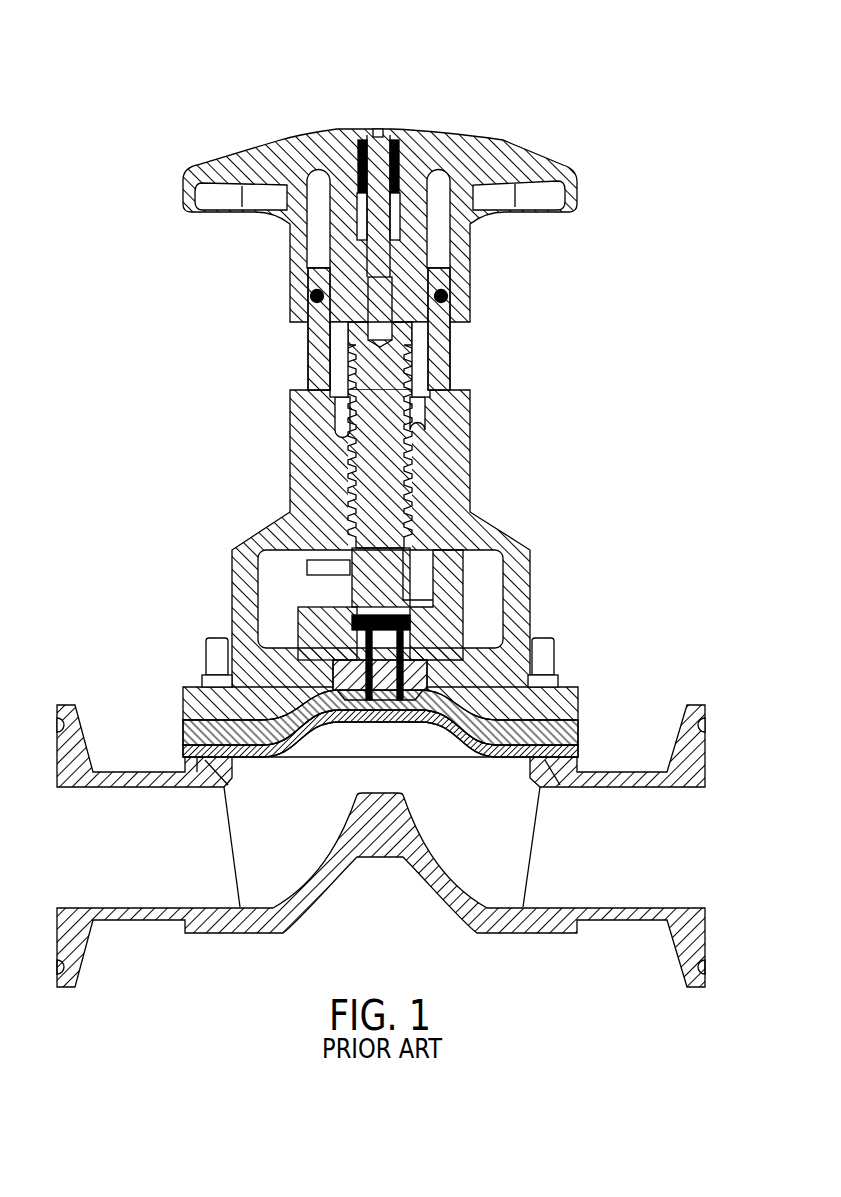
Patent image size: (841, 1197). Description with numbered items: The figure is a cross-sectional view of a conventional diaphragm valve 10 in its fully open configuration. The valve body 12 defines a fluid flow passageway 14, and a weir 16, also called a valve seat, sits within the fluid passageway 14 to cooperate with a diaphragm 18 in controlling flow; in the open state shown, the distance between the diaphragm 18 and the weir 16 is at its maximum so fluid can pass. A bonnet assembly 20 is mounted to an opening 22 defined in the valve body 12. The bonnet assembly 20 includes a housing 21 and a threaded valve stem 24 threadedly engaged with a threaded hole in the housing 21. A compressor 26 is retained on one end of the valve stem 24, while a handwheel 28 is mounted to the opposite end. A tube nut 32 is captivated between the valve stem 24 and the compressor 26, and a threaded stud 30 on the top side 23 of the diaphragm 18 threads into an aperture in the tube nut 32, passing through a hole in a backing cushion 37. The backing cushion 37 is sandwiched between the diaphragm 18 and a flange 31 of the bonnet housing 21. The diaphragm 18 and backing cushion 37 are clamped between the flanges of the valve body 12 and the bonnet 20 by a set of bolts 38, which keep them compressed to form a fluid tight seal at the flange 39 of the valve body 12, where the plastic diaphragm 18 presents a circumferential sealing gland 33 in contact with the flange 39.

The diaphragm valve 10 is at (60, 82).
The valve body 12 is at (712, 700).
The fluid flow passageway 14 is at (690, 845).
The weir 16 is at (384, 853).
The diaphragm 18 is at (490, 750).
The bonnet assembly 20 is at (510, 525).
The housing 21 is at (532, 610).
The opening 22 is at (230, 777).
The top side 23 is at (578, 740).
The threaded valve stem 24 is at (382, 388).
The compressor 26 is at (455, 590).
The handwheel 28 is at (560, 172).
The threaded stud 30 is at (374, 727).
The flange 31 is at (552, 693).
The tube nut 32 is at (325, 604).
The circumferential sealing gland 33 is at (200, 775).
The backing cushion 37 is at (568, 731).
The bolts 38 is at (216, 656).
The flange 39 is at (572, 772).